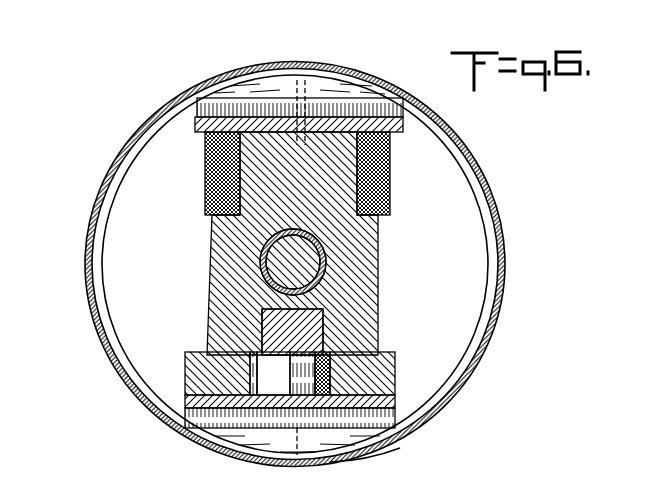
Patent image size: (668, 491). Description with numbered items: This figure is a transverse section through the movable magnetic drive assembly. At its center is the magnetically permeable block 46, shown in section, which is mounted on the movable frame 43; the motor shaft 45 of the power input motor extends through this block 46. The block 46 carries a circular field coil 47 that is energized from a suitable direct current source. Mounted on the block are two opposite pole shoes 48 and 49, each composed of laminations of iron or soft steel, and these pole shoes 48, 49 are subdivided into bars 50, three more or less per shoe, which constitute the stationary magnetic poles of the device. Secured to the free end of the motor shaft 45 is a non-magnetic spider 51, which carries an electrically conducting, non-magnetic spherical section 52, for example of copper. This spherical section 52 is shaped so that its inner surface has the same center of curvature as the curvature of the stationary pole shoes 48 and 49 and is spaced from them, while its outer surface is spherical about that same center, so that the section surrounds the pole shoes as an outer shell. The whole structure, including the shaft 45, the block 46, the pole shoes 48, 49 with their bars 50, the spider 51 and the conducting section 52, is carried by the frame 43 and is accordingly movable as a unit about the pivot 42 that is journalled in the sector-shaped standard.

The pivot 42 is at (327, 372).
The movable frame 43 is at (262, 326).
The motor shaft 45 is at (303, 260).
The magnetically permeable block 46 is at (378, 307).
The circular field coil 47 is at (380, 186).
The pole shoe 48 is at (350, 93).
The pole shoe 49 is at (357, 458).
The bars 50 is at (253, 437).
The non-magnetic spider 51 is at (133, 297).
The spherical section 52 is at (181, 102).